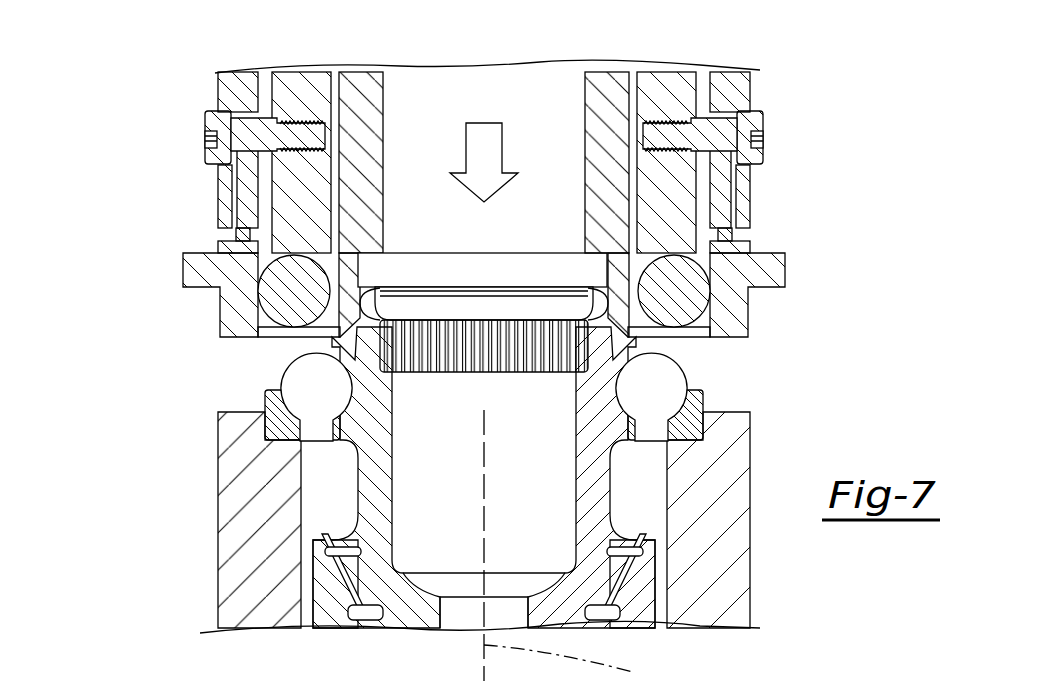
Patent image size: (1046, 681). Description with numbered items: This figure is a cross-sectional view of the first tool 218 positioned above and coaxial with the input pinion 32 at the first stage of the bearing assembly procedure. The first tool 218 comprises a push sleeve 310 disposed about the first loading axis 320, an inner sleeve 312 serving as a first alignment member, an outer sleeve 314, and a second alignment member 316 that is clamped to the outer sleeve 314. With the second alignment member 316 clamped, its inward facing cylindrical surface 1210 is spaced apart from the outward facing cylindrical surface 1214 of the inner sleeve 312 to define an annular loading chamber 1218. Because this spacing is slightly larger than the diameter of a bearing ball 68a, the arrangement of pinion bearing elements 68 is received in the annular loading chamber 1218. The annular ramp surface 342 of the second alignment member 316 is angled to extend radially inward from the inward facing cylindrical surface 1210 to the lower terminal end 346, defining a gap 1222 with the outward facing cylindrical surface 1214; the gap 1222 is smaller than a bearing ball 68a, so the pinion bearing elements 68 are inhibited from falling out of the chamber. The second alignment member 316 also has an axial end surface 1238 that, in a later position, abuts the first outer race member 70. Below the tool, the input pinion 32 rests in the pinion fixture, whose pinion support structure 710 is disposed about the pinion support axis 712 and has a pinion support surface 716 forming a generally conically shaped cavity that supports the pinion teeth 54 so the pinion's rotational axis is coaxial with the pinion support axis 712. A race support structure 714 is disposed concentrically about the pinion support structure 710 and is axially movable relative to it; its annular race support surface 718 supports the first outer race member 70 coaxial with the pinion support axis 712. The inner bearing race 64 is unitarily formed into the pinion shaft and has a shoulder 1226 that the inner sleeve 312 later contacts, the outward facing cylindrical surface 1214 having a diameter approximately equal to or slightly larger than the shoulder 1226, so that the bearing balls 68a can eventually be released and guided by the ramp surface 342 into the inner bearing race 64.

The first tool 218 is at (165, 98).
The push sleeve 310 is at (330, 105).
The inner sleeve 312 is at (352, 103).
The outer sleeve 314 is at (729, 78).
The inward facing cylindrical surface 1210 is at (245, 240).
The outward facing cylindrical surface 1214 is at (333, 250).
The annular loading chamber 1218 is at (700, 258).
The second alignment member 316 is at (783, 283).
The annular ramp surface 342 is at (258, 316).
The pinion bearing elements 68 is at (275, 291).
The bearing balls 68a is at (706, 297).
The axial end surface 1238 is at (277, 326).
The gap 1222 is at (663, 340).
The shoulder 1226 is at (360, 328).
The lower terminal end 346 is at (633, 343).
The inner bearing race 64 is at (613, 372).
The annular race support surface 718 is at (280, 436).
The first outer race member 70 is at (697, 428).
The race support structure 714 is at (240, 570).
The pinion support surface 716 is at (598, 608).
The pinion teeth 54 is at (345, 586).
The pinion support structure 710 is at (333, 620).
The input pinion 32 is at (417, 614).
The pinion support axis 712 is at (580, 545).
The first loading axis 320 is at (598, 663).